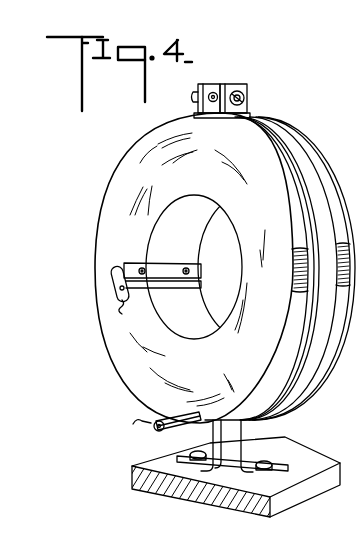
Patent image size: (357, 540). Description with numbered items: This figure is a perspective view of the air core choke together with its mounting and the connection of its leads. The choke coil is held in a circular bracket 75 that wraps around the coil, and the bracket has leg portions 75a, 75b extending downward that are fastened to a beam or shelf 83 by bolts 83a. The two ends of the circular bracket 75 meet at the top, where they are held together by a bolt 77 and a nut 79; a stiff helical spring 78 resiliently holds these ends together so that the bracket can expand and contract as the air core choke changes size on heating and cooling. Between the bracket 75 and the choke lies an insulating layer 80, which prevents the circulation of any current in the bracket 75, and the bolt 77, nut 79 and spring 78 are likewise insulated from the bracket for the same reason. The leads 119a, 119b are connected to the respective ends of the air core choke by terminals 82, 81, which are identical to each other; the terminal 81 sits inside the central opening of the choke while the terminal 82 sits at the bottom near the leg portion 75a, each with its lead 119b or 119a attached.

The circular bracket 75 is at (272, 132).
The leg portion 75a is at (236, 438).
The leg portion 75b is at (284, 466).
The bolt 77 is at (246, 96).
The stiff helical spring 78 is at (215, 84).
The nut 79 is at (193, 97).
The insulating layer 80 is at (314, 158).
The terminal 81 is at (141, 270).
The terminal 82 is at (154, 428).
The beam or shelf 83 is at (271, 501).
The bolts 83a is at (258, 474).
The lead 119a is at (138, 421).
The lead 119b is at (120, 297).